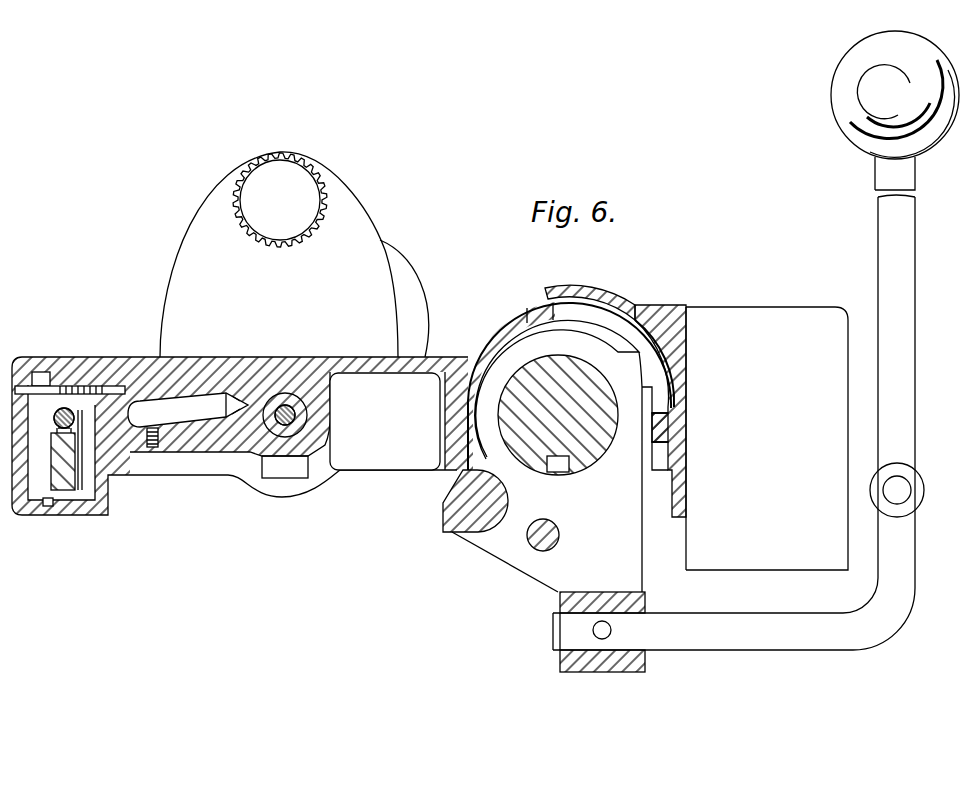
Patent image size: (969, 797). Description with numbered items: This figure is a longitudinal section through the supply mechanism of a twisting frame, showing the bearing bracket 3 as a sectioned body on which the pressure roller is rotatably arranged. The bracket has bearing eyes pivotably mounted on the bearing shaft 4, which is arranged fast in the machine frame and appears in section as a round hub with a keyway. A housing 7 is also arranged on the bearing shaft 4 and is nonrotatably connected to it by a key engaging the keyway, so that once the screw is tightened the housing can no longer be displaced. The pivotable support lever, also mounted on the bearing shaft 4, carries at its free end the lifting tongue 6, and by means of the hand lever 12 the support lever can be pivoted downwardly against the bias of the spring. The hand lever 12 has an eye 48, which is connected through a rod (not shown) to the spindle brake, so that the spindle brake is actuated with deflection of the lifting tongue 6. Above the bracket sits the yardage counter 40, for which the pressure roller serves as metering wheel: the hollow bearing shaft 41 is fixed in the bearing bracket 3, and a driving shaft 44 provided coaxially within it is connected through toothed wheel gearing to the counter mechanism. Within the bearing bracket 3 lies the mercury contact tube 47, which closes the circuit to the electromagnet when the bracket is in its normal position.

The bearing bracket 3 is at (132, 382).
The bearing shaft 4 is at (545, 418).
The lifting tongue 6 is at (502, 536).
The housing 7 is at (630, 312).
The hand lever 12 is at (905, 292).
The yardage counter 40 is at (345, 223).
The bearing shaft 41 is at (287, 438).
The driving shaft 44 is at (300, 428).
The mercury contact tube 47 is at (193, 420).
The eye 48 is at (912, 486).